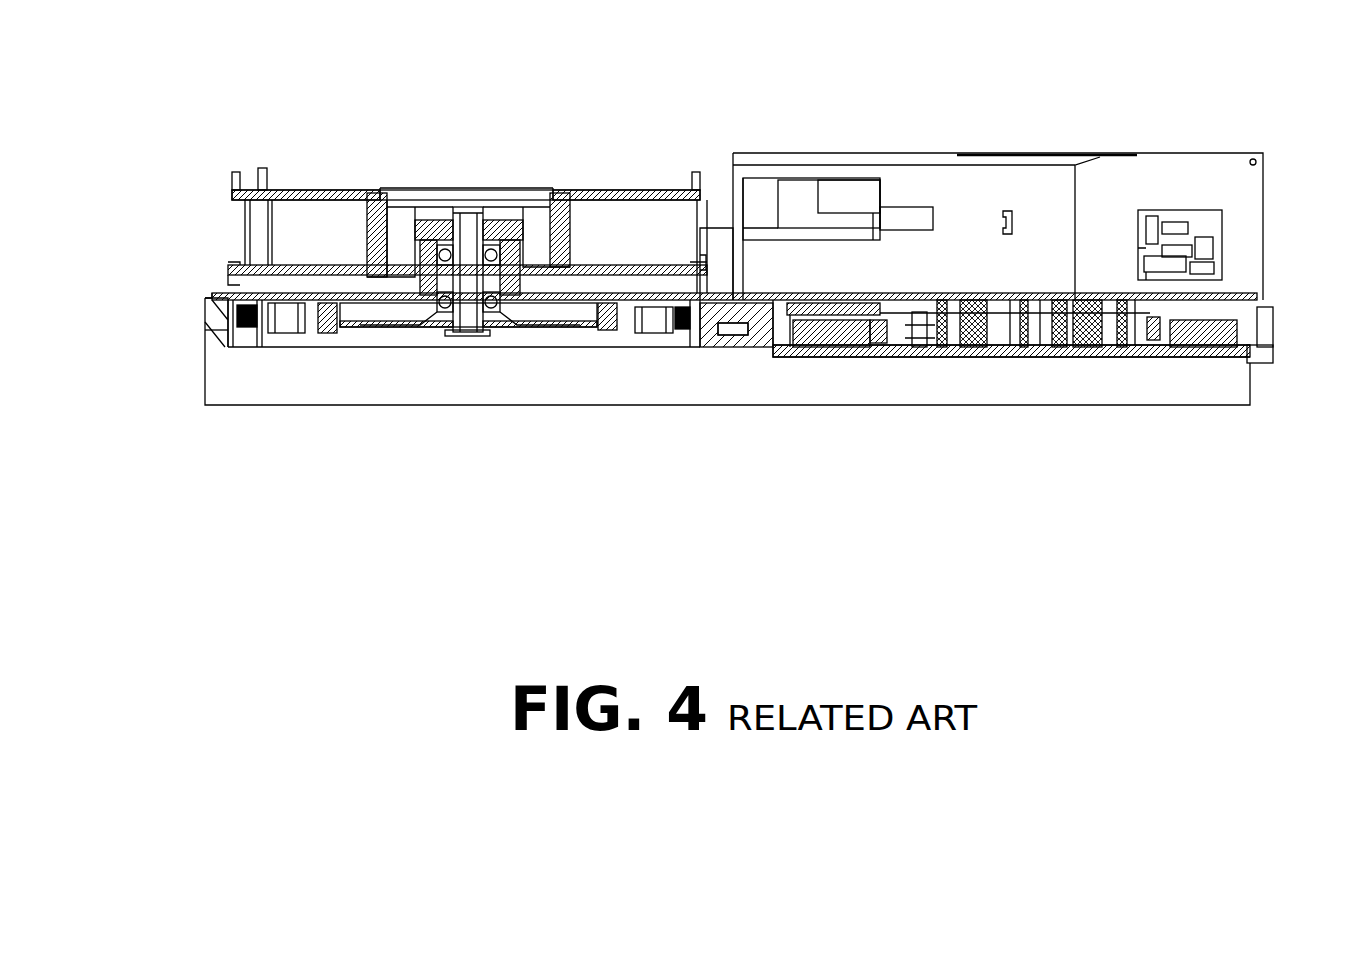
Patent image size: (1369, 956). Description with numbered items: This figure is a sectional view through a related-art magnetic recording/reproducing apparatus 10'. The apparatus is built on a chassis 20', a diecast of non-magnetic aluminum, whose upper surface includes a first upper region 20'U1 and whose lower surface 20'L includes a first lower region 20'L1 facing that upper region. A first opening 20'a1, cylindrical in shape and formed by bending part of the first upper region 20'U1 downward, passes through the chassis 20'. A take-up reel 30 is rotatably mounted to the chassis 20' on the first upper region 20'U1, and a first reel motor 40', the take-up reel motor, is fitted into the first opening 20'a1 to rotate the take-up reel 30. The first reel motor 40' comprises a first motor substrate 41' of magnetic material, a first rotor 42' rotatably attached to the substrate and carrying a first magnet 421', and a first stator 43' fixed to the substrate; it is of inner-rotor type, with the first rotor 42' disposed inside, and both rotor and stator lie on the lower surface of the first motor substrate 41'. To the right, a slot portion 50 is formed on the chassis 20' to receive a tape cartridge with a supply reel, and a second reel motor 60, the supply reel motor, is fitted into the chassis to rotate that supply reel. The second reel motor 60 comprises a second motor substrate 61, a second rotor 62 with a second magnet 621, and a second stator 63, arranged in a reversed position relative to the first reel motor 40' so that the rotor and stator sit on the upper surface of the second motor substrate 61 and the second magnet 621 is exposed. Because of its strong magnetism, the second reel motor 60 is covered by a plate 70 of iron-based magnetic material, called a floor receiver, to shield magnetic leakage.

The magnetic recording/reproducing apparatus 10' is at (464, 568).
The chassis 20' is at (727, 371).
The first upper region 20'U1 is at (675, 258).
The first lower region 20'L1 is at (163, 353).
The first opening 20'a1 is at (191, 415).
The lower surface 20'L is at (757, 399).
The take-up reel 30 is at (604, 192).
The first reel motor 40' is at (467, 217).
The first motor substrate 41' is at (364, 211).
The first rotor 42' is at (468, 384).
The first magnet 421' is at (469, 406).
The first stator 43' is at (463, 383).
The slot portion 50 is at (931, 188).
The second reel motor 60 is at (1087, 350).
The second motor substrate 61 is at (925, 350).
The second rotor 62 is at (978, 350).
The second magnet 621 is at (883, 350).
The second stator 63 is at (830, 350).
The plate 70 is at (1265, 300).